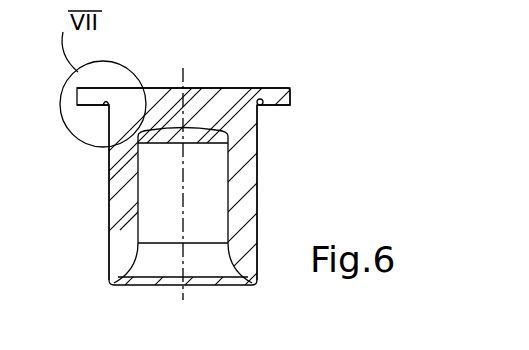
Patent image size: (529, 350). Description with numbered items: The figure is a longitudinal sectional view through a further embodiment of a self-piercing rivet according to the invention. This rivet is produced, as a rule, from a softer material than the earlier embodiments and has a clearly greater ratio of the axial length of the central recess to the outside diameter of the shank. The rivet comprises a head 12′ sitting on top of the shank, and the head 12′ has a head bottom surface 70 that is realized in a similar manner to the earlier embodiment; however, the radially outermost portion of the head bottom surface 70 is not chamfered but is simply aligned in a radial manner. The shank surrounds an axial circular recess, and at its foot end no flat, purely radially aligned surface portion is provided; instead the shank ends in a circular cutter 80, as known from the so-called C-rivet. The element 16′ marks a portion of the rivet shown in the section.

The head 12′ is at (212, 98).
The shank wall 16′ is at (265, 112).
The head bottom surface 70 is at (72, 134).
The circular cutter 80 is at (252, 283).